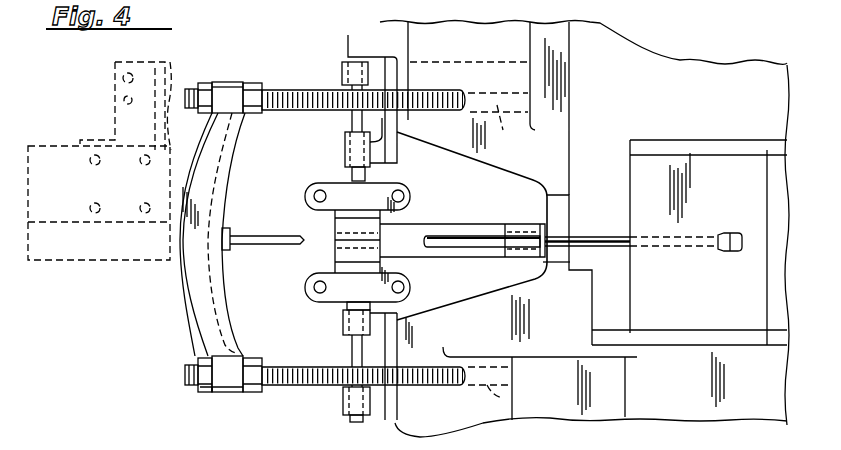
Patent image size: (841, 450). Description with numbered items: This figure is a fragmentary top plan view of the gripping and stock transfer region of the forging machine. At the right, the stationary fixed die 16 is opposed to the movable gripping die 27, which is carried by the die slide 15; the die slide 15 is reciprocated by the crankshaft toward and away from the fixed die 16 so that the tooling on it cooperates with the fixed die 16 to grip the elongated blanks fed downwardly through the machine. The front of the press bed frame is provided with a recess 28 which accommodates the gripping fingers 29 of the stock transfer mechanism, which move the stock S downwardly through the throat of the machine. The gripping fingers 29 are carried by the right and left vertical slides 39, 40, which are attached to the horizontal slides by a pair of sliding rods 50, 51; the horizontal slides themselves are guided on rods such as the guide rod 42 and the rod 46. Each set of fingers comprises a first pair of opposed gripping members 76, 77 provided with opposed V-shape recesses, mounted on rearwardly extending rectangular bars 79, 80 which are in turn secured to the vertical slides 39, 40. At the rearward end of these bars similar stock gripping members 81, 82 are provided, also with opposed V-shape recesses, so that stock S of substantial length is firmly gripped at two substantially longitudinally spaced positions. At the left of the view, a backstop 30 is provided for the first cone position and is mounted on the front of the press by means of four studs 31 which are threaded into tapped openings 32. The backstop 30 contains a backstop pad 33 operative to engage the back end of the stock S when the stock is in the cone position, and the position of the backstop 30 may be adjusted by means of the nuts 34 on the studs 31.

The die slide 15 is at (675, 62).
The movable gripping die 27 is at (706, 158).
The fixed die 16 is at (686, 335).
The recess 28 is at (468, 298).
The tapped openings 32 is at (520, 400).
The stock S is at (598, 235).
The gripping fingers 29 is at (505, 213).
The sliding rod 51 is at (400, 292).
The studs 31 is at (290, 88).
The rod 46 is at (353, 118).
The guide rod 42 is at (352, 353).
The left vertical slide 40 is at (330, 205).
The sliding rod 50 is at (313, 282).
The right vertical slide 39 is at (333, 274).
The gripping member 76 is at (362, 228).
The gripping member 77 is at (363, 250).
The rectangular bar 80 is at (432, 224).
The rectangular bar 79 is at (468, 258).
The stock gripping member 82 is at (522, 225).
The stock gripping member 81 is at (518, 258).
The backstop pad 33 is at (232, 230).
The backstop 30 is at (197, 291).
The nuts 34 is at (205, 390).